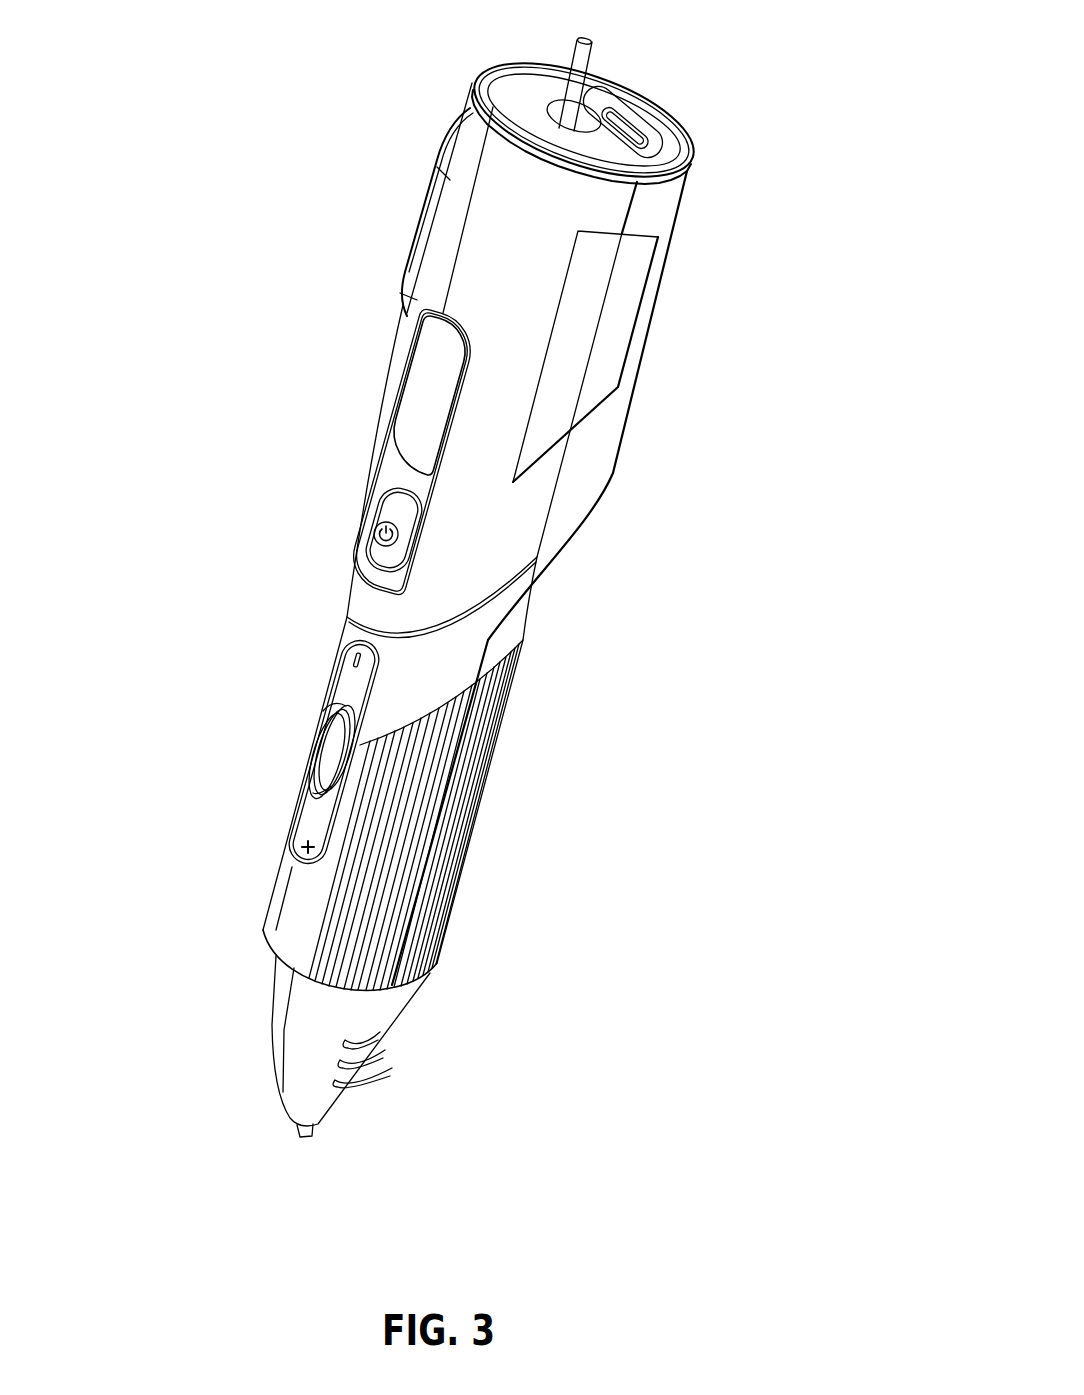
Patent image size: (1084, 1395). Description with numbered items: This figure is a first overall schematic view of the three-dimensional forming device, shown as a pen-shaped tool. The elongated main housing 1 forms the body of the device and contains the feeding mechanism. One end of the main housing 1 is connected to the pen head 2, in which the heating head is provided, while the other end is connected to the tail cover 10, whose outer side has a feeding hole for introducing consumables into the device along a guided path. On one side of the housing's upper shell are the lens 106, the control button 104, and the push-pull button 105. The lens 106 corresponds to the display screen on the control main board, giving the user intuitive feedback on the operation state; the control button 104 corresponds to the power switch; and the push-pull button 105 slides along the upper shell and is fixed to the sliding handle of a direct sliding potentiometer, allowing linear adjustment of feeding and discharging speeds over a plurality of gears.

The main housing 1 is at (485, 557).
The pen head 2 is at (308, 1048).
The tail cover 10 is at (607, 150).
The control button 104 is at (373, 523).
The push-pull button 105 is at (313, 740).
The lens 106 is at (420, 398).